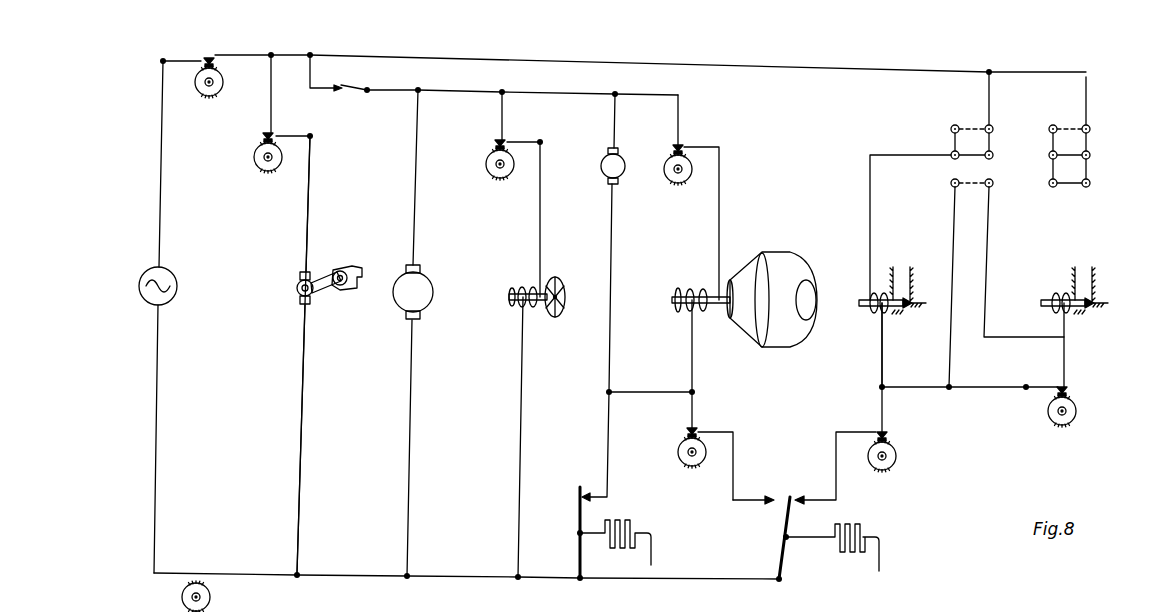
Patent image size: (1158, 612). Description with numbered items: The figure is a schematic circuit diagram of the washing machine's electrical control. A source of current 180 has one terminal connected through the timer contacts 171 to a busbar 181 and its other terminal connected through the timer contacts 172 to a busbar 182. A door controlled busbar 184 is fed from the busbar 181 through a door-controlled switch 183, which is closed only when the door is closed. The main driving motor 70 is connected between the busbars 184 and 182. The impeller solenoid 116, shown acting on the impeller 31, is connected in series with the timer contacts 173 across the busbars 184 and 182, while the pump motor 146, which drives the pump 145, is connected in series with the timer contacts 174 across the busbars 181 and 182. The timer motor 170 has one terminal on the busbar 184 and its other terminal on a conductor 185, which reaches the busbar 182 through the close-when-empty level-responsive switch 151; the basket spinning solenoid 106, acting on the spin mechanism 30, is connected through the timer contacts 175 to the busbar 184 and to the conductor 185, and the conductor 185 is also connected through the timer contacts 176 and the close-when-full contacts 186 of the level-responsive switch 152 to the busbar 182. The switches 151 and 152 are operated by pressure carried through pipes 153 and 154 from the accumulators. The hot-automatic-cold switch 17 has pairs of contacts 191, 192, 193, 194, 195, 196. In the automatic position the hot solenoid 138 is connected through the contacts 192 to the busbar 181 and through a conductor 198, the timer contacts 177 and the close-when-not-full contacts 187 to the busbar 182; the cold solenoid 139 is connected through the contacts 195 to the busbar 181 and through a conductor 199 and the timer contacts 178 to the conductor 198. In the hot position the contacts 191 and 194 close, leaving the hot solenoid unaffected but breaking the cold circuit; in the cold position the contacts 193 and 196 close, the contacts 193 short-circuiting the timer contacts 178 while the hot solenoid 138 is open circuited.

The hot-automatic-cold switch 17 is at (1048, 192).
The pump 30 is at (790, 276).
The fan 31 is at (561, 286).
The main driving motor 70 is at (424, 282).
The basket spinning solenoid 106 is at (700, 286).
The impeller solenoid 116 is at (518, 288).
The hot solenoid 138 is at (870, 310).
The cold solenoid 139 is at (1042, 302).
The pump 145 is at (358, 266).
The pump motor 146 is at (298, 289).
The level-responsive switch 151 is at (576, 490).
The level-responsive switch 152 is at (782, 538).
The pipe 153 is at (656, 542).
The pipe 154 is at (884, 556).
The timer motor 170 is at (601, 173).
The timer contacts 171 is at (214, 60).
The timer contacts 172 is at (194, 571).
The timer contacts 173 is at (508, 137).
The timer contacts 174 is at (284, 134).
The timer contacts 175 is at (689, 142).
The timer contacts 176 is at (704, 428).
The timer contacts 177 is at (887, 432).
The timer contacts 178 is at (1070, 389).
The source of current 180 is at (178, 284).
The busbar 181 is at (321, 59).
The busbar 182 is at (330, 574).
The door-controlled switch 183 is at (353, 84).
The door controlled busbar 184 is at (446, 92).
The conductor 185 is at (605, 348).
The close-when-full contacts 186 is at (751, 496).
The close-when-not-full contacts 187 is at (843, 478).
The contacts 191 is at (972, 124).
The contacts 192 is at (951, 151).
The contacts 193 is at (964, 188).
The contacts 194 is at (1074, 127).
The contacts 195 is at (1070, 158).
The contacts 196 is at (1072, 185).
The conductor 198 is at (882, 366).
The conductor 199 is at (1064, 366).